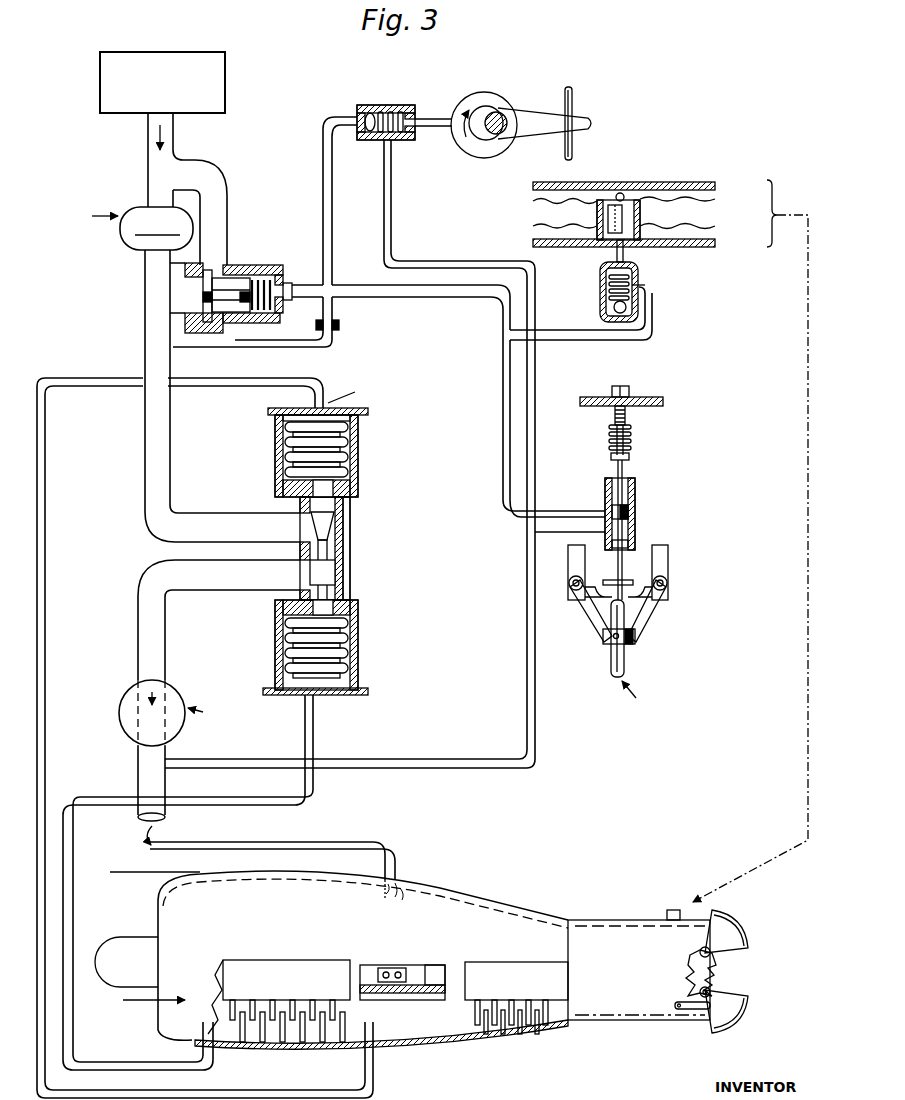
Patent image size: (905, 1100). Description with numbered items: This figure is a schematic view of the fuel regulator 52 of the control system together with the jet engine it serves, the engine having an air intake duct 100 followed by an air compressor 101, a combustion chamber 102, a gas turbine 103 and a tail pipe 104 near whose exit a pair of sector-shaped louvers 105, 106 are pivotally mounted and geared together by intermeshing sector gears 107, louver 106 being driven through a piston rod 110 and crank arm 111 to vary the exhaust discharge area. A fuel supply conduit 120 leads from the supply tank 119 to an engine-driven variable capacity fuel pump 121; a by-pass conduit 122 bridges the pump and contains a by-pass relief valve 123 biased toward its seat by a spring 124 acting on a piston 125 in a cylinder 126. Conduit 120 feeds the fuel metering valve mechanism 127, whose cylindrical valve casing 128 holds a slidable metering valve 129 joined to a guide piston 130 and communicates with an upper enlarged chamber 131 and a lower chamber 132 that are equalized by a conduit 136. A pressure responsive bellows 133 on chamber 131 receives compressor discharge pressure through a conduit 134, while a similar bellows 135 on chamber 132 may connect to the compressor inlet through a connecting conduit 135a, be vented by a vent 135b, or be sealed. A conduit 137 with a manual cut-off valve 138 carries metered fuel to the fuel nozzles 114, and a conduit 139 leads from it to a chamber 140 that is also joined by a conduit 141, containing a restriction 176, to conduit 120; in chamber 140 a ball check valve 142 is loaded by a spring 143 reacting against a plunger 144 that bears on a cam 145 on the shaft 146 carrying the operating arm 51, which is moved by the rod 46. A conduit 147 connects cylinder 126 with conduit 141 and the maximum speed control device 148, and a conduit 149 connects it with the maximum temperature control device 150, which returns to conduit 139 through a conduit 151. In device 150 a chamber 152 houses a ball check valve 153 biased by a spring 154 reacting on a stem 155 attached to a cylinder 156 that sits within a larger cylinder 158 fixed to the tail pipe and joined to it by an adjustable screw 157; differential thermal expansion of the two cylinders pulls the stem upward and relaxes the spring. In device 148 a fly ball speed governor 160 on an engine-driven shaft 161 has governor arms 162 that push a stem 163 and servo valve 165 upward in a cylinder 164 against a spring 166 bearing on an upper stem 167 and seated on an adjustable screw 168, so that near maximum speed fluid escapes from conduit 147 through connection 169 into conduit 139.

The supply tank 119 is at (226, 78).
The fuel supply conduit 120 is at (160, 165).
The variable capacity fuel pump 121 is at (120, 236).
The by-pass conduit 122 is at (222, 205).
The by-pass relief valve 123 is at (203, 297).
The spring 124 is at (265, 268).
The piston 125 is at (245, 275).
The cylinder 126 is at (240, 323).
The fuel metering valve mechanism 127 is at (319, 551).
The cylindrical valve casing 128 is at (345, 556).
The metering valve 129 is at (310, 580).
The guide piston 130 is at (310, 520).
The enlarged chamber 131 is at (357, 463).
The chamber 132 is at (357, 622).
The pressure responsive bellows 133 is at (357, 441).
The conduit 134 is at (312, 385).
The pressure responsive bellows 135 is at (290, 640).
The connecting conduit 135a is at (315, 708).
The vent 135b is at (273, 617).
The conduit 136 is at (351, 567).
The conduit 137 is at (152, 608).
The manual cut-off valve 138 is at (130, 732).
The conduit 139 is at (392, 202).
The chamber 140 is at (410, 114).
The conduit 141 is at (238, 348).
The ball check valve 142 is at (372, 110).
The spring 143 is at (400, 137).
The plunger 144 is at (432, 117).
The cam 145 is at (534, 133).
The shaft 146 is at (494, 136).
The conduit 147 is at (565, 498).
The maximum speed control device 148 is at (640, 518).
The conduit 149 is at (547, 332).
The maximum temperature control device 150 is at (637, 296).
The conduit 151 is at (592, 342).
The chamber 152 is at (600, 278).
The ball check valve 153 is at (630, 307).
The spring 154 is at (643, 283).
The stem 155 is at (630, 248).
The cylinder 156 is at (642, 220).
The adjustable screw 157 is at (625, 195).
The cylinder 158 is at (597, 218).
The fly ball speed governor 160 is at (637, 638).
The shaft 161 is at (628, 662).
The governor arms 162 is at (662, 577).
The stem 163 is at (623, 565).
The cylinder 164 is at (664, 534).
The servo valve 165 is at (630, 514).
The spring 166 is at (636, 437).
The stem 167 is at (624, 470).
The adjustable screw 168 is at (640, 398).
The connection 169 is at (559, 533).
The restriction 176 is at (340, 326).
The rod 46 is at (573, 103).
The operating arm 51 is at (512, 133).
The fuel supply regulator 52 is at (618, 88).
The air intake duct 100 is at (158, 926).
The air compressor 101 is at (292, 1030).
The combustion chamber 102 is at (413, 1035).
The gas turbine 103 is at (510, 1022).
The tail pipe 104 is at (600, 918).
The louver 105 is at (740, 937).
The louver 106 is at (750, 1010).
The sector gears 107 is at (690, 960).
The piston rod 110 is at (678, 1002).
The crank arm 111 is at (728, 1000).
The fuel nozzles 114 is at (402, 912).